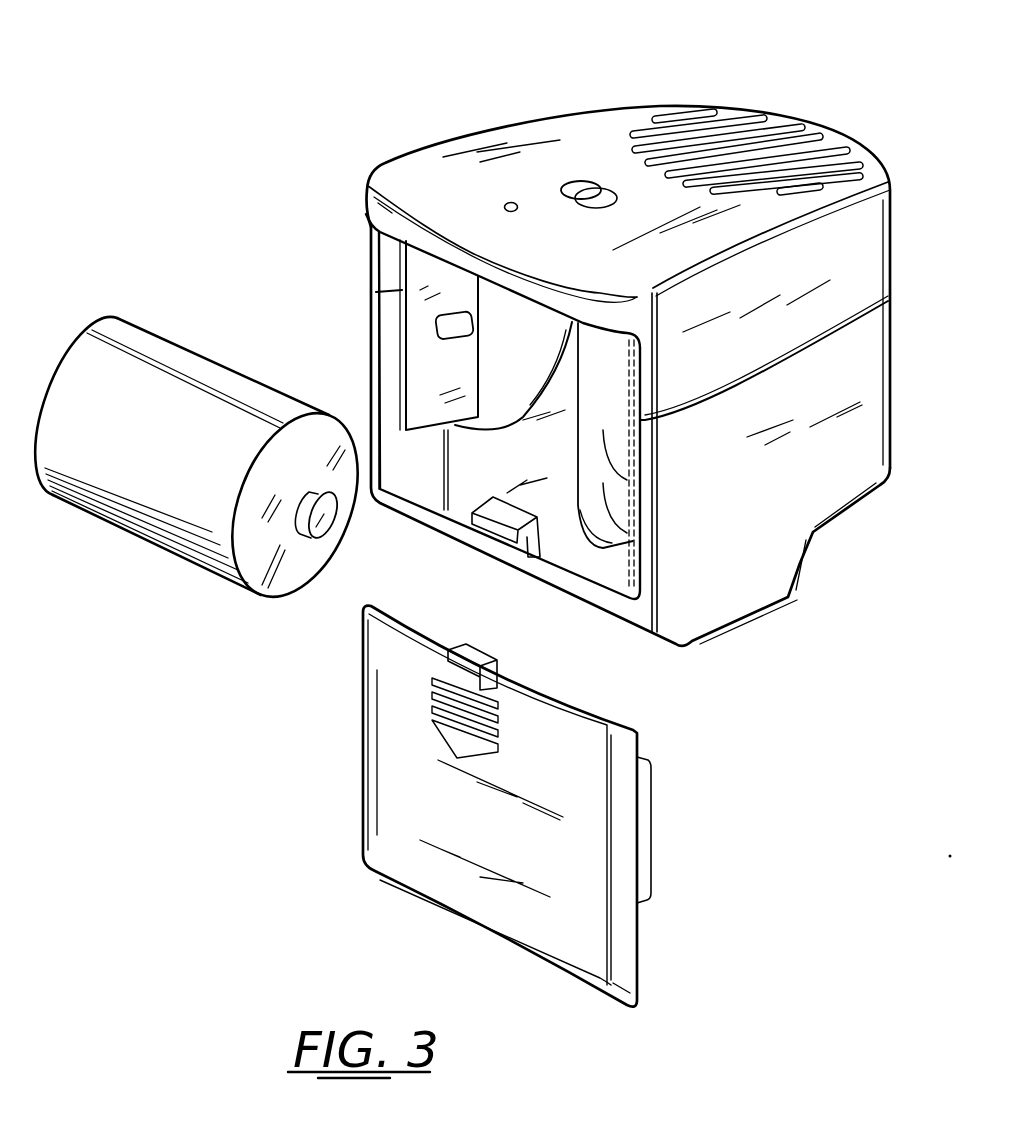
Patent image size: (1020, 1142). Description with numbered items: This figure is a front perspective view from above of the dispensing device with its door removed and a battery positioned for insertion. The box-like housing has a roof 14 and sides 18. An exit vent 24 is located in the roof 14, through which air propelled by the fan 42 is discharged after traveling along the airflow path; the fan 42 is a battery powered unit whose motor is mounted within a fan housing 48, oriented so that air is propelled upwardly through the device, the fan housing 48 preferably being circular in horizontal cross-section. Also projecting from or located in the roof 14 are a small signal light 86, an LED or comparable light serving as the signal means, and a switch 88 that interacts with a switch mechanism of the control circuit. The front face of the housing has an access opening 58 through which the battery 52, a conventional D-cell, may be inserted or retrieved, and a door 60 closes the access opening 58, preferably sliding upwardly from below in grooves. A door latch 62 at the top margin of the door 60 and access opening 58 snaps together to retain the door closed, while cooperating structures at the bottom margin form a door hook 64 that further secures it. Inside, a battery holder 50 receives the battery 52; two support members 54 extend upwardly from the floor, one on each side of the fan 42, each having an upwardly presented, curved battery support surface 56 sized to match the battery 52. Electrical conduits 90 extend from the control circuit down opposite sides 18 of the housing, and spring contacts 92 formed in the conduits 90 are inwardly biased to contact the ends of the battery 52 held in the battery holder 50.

The roof 14 is at (417, 190).
The sides 18 is at (833, 480).
The exit vent 24 is at (708, 112).
The fan 42 is at (603, 440).
The fan housing 48 is at (603, 492).
The battery holder 50 is at (457, 467).
The battery 52 is at (212, 532).
The support members 54 is at (467, 500).
The battery support surfaces 56 is at (530, 412).
The access opening 58 is at (613, 603).
The door 60 is at (609, 920).
The door latch 62 is at (475, 651).
The door hook 64 is at (543, 530).
The signal light 86 is at (508, 203).
The switch 88 is at (583, 190).
The electrical conduits 90 is at (435, 303).
The spring contacts 92 is at (435, 343).